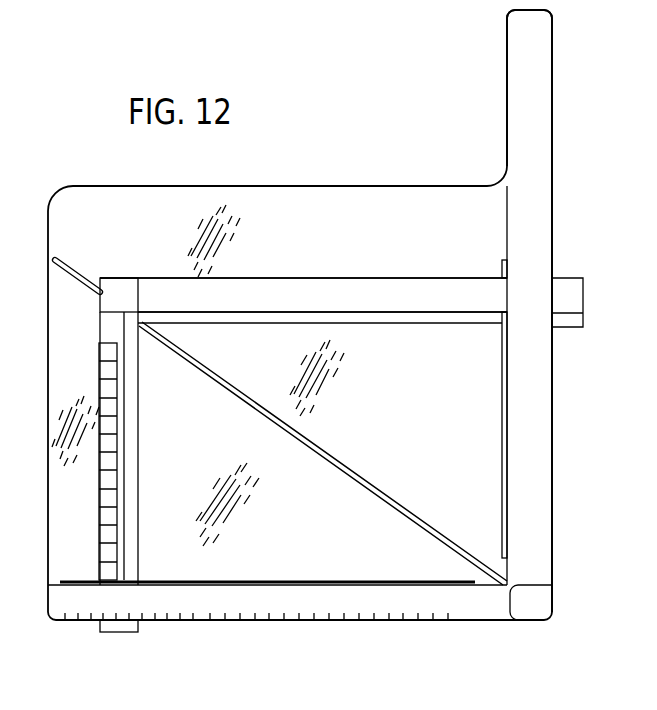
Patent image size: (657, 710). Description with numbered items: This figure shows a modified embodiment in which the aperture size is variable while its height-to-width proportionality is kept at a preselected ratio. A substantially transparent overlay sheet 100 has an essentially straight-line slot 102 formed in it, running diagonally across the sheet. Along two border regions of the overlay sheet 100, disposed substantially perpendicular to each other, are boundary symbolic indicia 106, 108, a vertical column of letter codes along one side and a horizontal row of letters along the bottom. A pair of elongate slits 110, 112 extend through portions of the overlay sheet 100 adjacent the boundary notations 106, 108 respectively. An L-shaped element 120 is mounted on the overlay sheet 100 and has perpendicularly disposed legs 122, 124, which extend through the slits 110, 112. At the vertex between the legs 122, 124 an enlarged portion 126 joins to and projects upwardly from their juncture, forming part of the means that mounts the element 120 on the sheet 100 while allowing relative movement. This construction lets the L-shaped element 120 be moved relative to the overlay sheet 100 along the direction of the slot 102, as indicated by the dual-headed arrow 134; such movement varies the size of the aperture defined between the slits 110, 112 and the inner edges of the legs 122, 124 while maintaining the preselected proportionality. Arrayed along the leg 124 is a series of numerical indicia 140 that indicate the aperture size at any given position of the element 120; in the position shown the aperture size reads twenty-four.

The overlay sheet 100 is at (480, 462).
The slot 102 is at (352, 472).
The boundary symbolic indicia 106 is at (554, 244).
The boundary symbolic indicia 108 is at (256, 620).
The elongate slit 110 is at (502, 388).
The elongate slit 112 is at (265, 582).
The L-shaped element 120 is at (417, 298).
The leg 122 is at (314, 287).
The leg 124 is at (138, 424).
The enlarged portion 126 is at (118, 292).
The dual-headed arrow 134 is at (65, 234).
The numbered vertical scale 140 is at (99, 514).